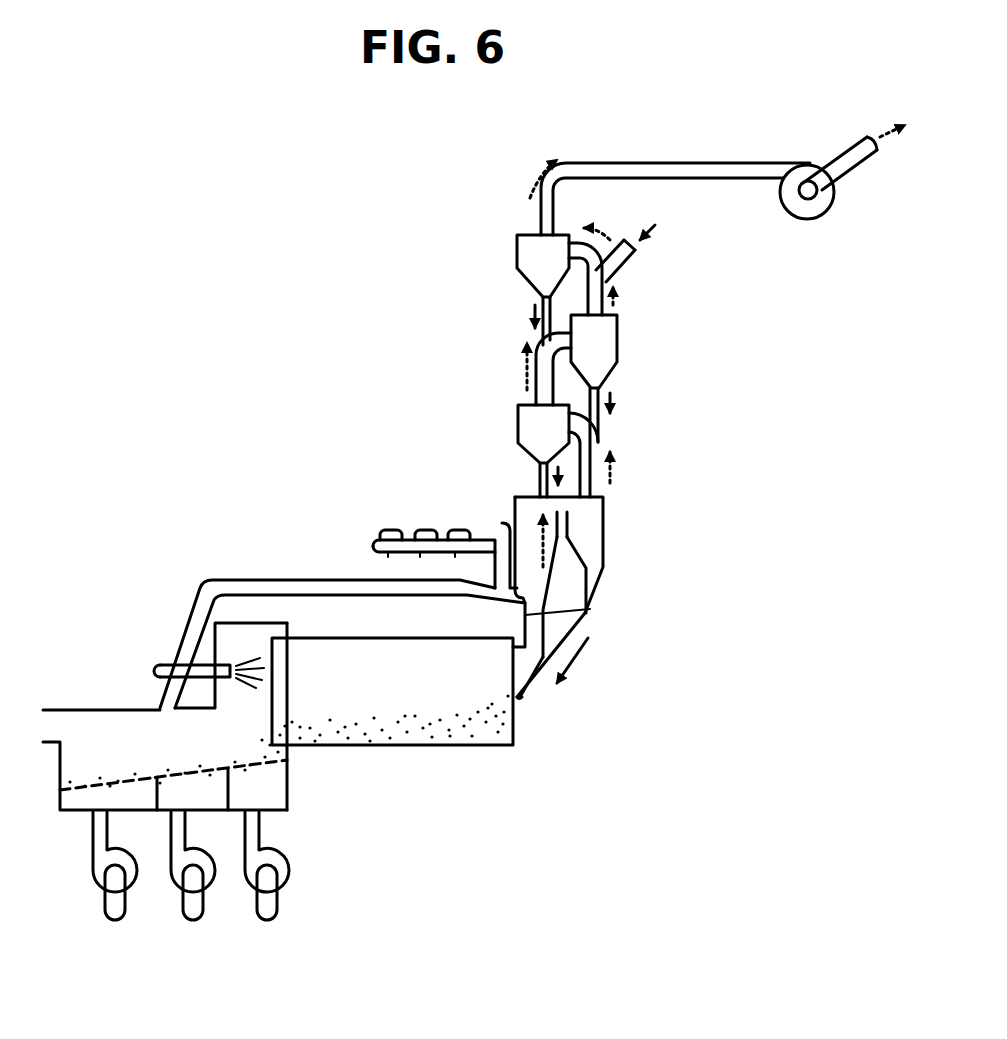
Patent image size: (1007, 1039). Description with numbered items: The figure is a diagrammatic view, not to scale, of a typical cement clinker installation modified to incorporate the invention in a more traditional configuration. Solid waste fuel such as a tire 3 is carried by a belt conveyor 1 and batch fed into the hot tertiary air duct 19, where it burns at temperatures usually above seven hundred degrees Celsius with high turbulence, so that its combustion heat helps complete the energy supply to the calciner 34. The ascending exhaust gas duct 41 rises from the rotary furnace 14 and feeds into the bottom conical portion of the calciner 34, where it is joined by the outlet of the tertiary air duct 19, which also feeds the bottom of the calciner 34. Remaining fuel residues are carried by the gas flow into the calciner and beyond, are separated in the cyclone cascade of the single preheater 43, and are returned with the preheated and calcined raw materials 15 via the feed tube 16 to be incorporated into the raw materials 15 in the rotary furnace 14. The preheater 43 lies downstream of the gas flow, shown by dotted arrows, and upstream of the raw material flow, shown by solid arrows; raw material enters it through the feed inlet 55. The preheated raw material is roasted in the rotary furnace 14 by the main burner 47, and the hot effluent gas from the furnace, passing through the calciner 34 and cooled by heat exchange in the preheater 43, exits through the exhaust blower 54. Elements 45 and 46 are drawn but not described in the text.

The belt conveyor 1 is at (372, 546).
The tire 3 is at (397, 528).
The rotary furnace 14 is at (390, 755).
The raw materials 15 is at (460, 720).
The feed tube 16 is at (590, 583).
The tertiary air duct 19 is at (348, 592).
The calciner 34 is at (520, 493).
The ascending exhaust gas duct 41 is at (590, 609).
The single preheater 43 is at (676, 397).
The inner tube 45 is at (600, 522).
The forehearth 46 is at (74, 688).
The main burner 47 is at (168, 664).
The exhaust blower 54 is at (815, 215).
The feed inlet 55 is at (633, 262).